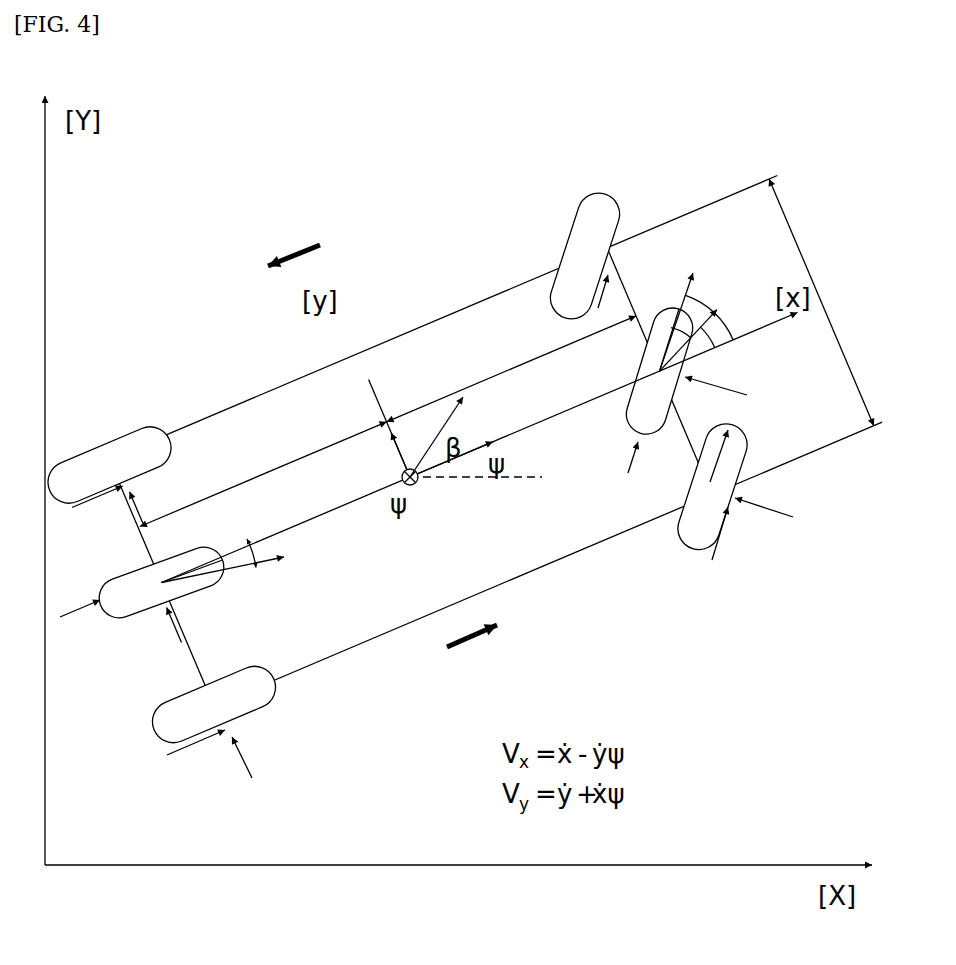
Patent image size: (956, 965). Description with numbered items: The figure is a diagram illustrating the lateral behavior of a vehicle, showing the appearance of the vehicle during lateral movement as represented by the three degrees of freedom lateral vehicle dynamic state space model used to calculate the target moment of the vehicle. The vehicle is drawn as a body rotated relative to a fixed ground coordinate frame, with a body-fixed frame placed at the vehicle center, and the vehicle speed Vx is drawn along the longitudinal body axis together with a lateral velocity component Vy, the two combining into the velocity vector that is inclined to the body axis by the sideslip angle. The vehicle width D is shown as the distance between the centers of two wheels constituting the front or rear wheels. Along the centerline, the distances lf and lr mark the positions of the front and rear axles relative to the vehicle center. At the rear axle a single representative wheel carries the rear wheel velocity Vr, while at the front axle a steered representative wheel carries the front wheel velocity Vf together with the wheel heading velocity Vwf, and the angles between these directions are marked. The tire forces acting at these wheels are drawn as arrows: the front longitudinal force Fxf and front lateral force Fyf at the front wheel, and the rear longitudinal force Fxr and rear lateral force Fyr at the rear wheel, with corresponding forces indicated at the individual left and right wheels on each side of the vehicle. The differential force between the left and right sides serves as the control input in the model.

The vehicle width D is at (821, 302).
The vehicle speed Vx is at (452, 437).
The lateral velocity Vy is at (407, 450).
The rear wheel velocity Vr is at (236, 563).
The front wheel velocity Vf is at (701, 328).
The front wheel heading velocity Vwf is at (689, 307).
The front longitudinal force Fxf is at (632, 476).
The front lateral force Fyf is at (733, 399).
The rear longitudinal force Fxr is at (80, 631).
The rear lateral force Fyr is at (162, 635).
The rear axle distance lr is at (263, 474).
The front axle distance lf is at (511, 369).